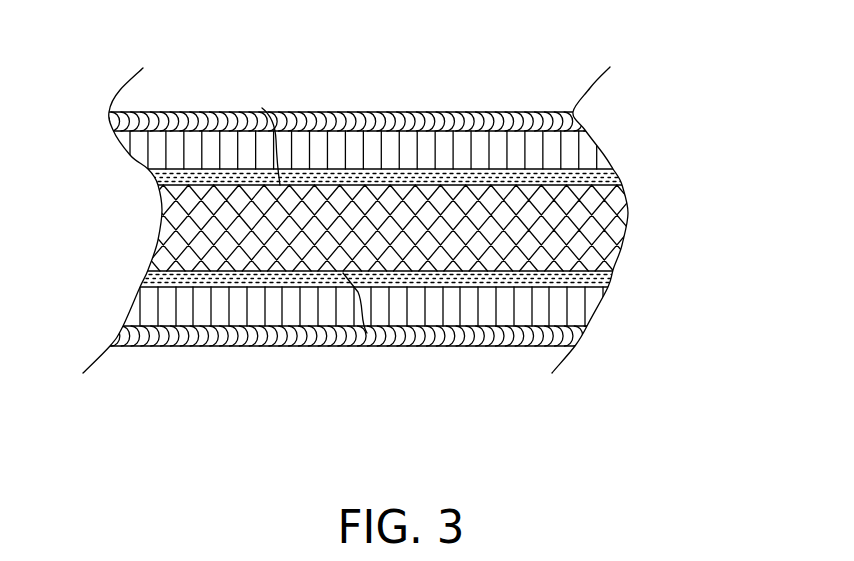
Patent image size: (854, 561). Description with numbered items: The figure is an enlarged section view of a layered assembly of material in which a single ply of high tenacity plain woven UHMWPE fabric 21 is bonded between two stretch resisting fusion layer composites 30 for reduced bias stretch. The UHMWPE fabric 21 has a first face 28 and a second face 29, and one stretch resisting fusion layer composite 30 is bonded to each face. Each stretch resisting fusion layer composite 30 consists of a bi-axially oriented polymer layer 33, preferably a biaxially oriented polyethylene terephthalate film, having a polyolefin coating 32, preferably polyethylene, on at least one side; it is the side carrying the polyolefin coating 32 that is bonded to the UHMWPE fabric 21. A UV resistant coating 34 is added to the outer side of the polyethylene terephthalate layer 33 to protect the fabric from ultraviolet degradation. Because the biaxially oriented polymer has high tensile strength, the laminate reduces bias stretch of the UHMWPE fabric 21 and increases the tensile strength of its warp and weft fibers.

The UHMWPE fabric 21 is at (608, 242).
The first face 28 is at (262, 108).
The second face 29 is at (367, 333).
The stretch resisting fusion layer composite 30 is at (342, 102).
The polyolefin coating 32 is at (620, 182).
The bi-axially oriented polymer layer 33 is at (588, 143).
The UV resistant coating 34 is at (575, 119).